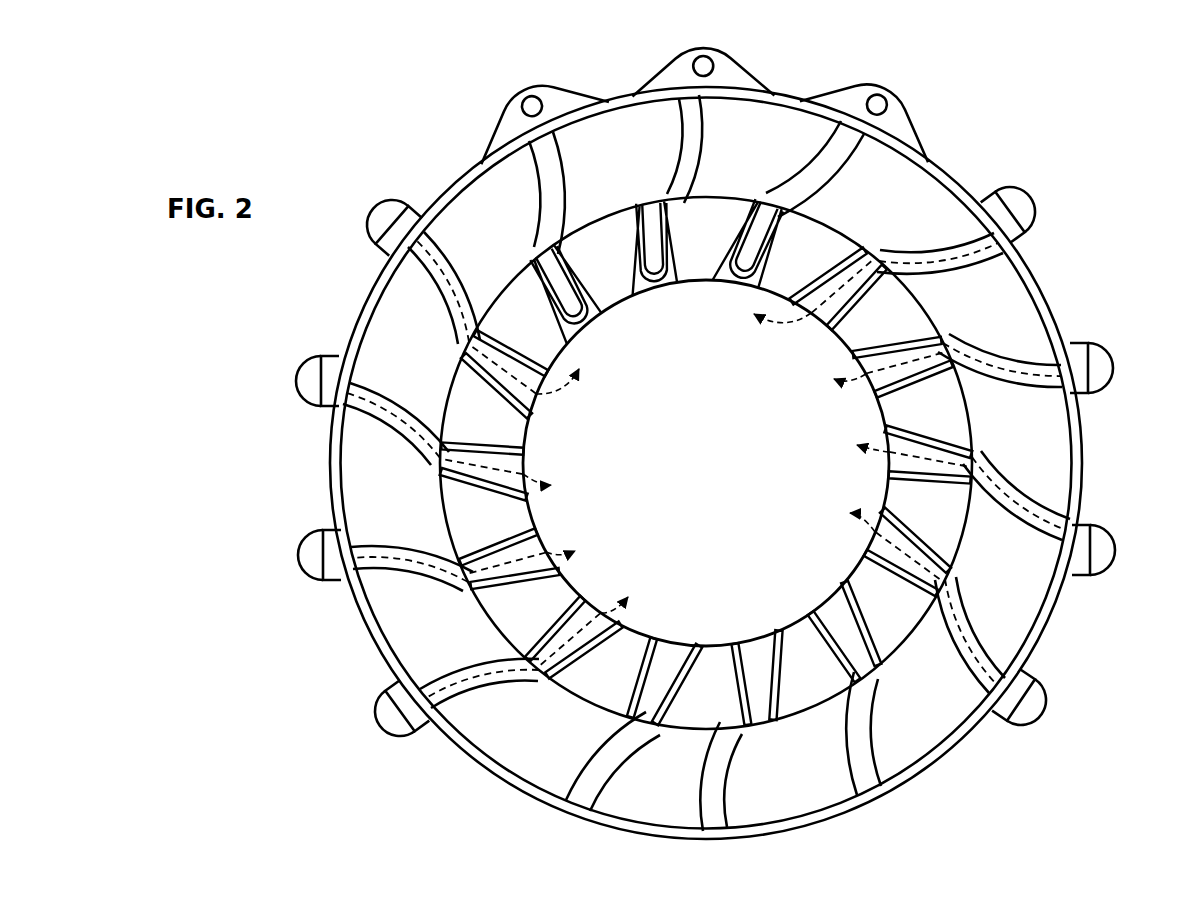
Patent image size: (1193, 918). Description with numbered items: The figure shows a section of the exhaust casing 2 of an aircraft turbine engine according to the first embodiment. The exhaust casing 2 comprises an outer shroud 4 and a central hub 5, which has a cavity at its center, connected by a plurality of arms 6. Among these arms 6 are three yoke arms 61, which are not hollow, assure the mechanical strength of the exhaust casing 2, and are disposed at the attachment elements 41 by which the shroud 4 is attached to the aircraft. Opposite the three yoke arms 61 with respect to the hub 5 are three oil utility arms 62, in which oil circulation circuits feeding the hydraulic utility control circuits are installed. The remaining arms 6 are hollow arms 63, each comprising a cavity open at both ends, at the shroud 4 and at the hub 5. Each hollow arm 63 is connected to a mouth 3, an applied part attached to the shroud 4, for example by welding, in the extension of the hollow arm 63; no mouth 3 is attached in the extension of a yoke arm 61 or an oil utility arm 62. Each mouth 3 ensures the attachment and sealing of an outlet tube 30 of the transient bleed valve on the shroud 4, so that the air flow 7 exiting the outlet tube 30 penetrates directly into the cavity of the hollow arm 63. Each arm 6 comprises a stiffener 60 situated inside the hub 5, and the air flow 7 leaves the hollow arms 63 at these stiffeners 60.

The exhaust casing 2 is at (1095, 265).
The mouth 3 is at (367, 203).
The shroud 4 is at (1030, 268).
The hub 5 is at (495, 606).
The arm 6 is at (705, 153).
The air flow 7 is at (795, 325).
The outlet tube 30 is at (378, 248).
The attachment element 41 is at (568, 86).
The stiffener 60 is at (522, 347).
The yoke arm 61 is at (538, 190).
The oil utility arm 62 is at (600, 758).
The hollow arm 63 is at (442, 295).